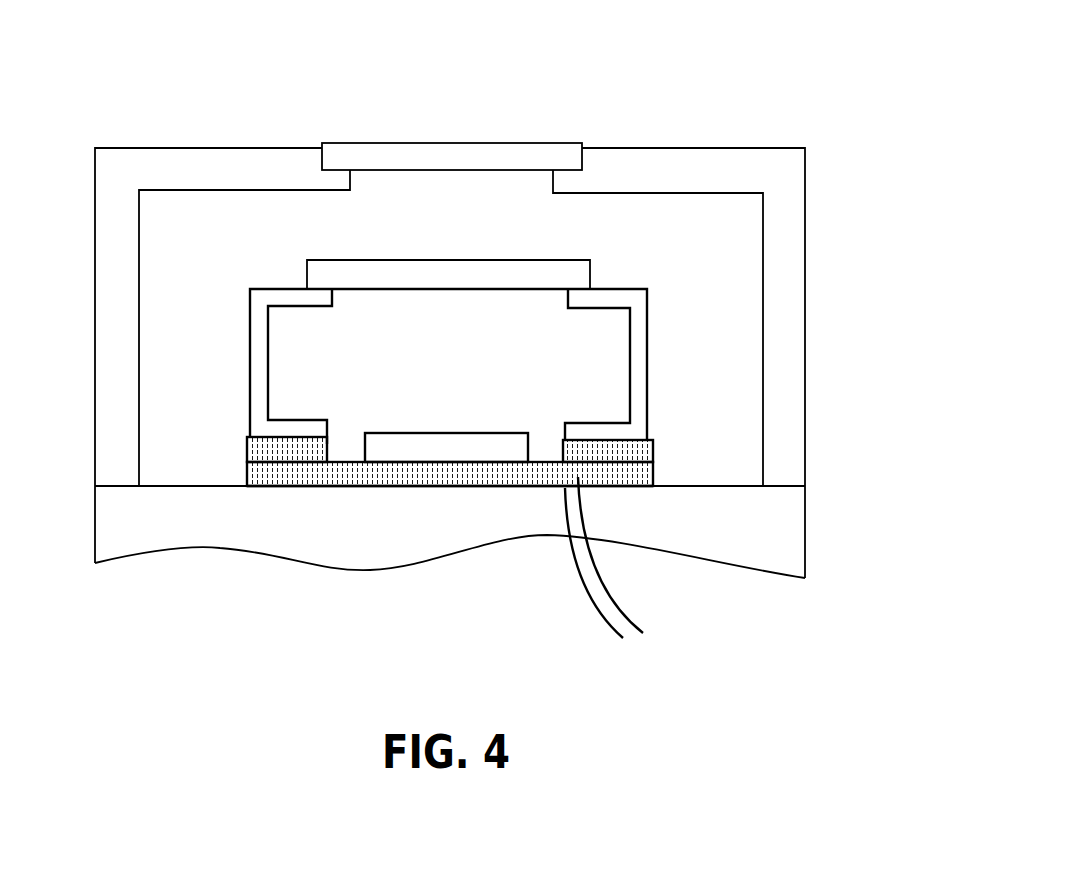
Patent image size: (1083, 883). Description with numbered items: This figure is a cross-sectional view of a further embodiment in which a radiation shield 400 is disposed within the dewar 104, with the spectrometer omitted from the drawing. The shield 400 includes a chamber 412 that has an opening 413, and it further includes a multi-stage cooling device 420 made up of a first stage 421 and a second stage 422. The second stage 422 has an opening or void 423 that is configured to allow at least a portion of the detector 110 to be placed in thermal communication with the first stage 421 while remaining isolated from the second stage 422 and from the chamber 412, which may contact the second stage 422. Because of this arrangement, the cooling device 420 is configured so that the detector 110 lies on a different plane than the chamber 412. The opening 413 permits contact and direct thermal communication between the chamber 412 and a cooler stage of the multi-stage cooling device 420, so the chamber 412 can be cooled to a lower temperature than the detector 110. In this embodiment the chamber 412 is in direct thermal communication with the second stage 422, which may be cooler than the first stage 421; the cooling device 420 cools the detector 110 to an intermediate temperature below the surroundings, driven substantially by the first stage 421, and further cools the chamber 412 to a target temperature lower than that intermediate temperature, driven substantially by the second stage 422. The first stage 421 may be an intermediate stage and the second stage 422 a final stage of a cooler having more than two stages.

The dewar 104 is at (622, 148).
The chamber 412 is at (607, 290).
The radiation shield 400 is at (668, 288).
The detector 110 is at (528, 433).
The opening 413 is at (565, 437).
The second stage 422 is at (245, 440).
The multi-stage cooling device 420 is at (248, 467).
The first stage 421 is at (283, 487).
The opening or void 423 is at (327, 440).